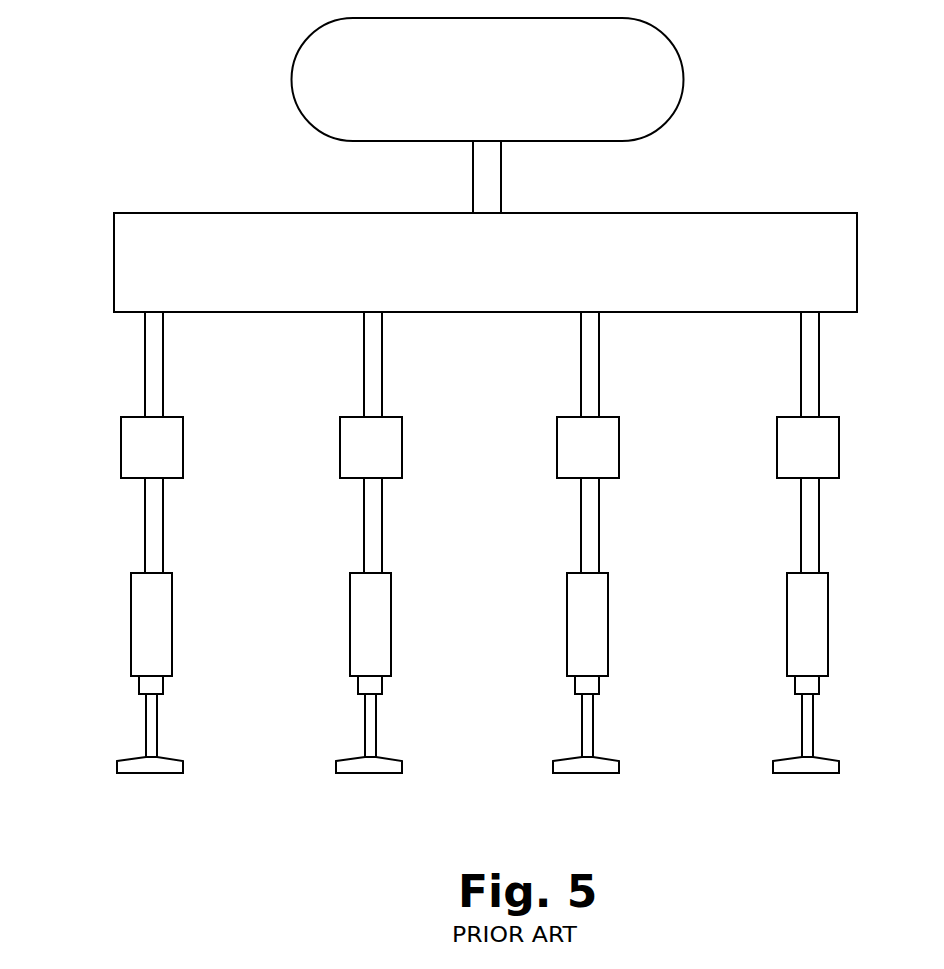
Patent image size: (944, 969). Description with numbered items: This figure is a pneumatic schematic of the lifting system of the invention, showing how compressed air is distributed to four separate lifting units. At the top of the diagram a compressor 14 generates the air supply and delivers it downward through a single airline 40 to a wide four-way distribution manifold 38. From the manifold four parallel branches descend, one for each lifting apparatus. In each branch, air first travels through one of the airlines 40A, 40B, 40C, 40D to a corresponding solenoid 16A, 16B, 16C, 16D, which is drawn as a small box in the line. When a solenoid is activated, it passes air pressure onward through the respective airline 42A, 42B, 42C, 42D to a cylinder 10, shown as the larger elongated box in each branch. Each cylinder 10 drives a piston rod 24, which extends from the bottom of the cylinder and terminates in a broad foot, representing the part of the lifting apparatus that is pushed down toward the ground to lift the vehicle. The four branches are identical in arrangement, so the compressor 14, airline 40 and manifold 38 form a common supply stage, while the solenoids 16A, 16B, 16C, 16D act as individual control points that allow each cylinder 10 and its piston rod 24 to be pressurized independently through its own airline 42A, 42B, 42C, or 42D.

The compressor 14 is at (320, 79).
The airline 40 is at (480, 176).
The 4-way distribution manifold 38 is at (739, 242).
The airline 40A is at (150, 373).
The airline 40B is at (316, 365).
The airline 40C is at (533, 365).
The airline 40D is at (753, 365).
The solenoid 16A is at (134, 446).
The solenoid 16B is at (326, 447).
The solenoid 16C is at (543, 447).
The solenoid 16D is at (763, 447).
The airline 42A is at (147, 527).
The airline 42B is at (316, 525).
The airline 42C is at (533, 525).
The airline 42D is at (753, 525).
The cylinder 10 is at (146, 620).
The piston rod 24 is at (148, 725).